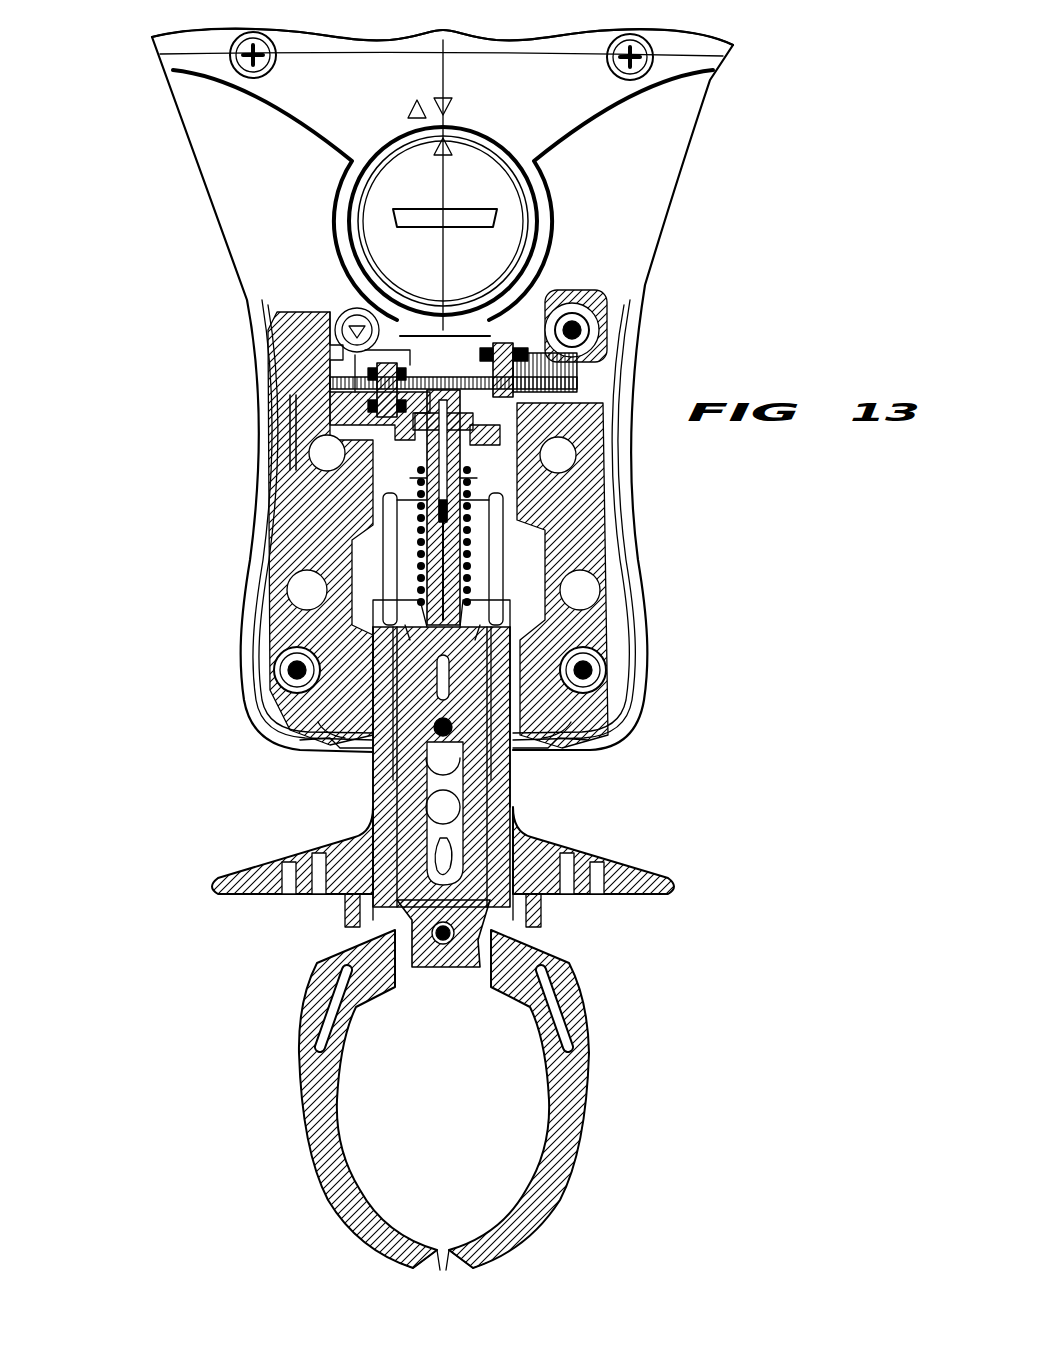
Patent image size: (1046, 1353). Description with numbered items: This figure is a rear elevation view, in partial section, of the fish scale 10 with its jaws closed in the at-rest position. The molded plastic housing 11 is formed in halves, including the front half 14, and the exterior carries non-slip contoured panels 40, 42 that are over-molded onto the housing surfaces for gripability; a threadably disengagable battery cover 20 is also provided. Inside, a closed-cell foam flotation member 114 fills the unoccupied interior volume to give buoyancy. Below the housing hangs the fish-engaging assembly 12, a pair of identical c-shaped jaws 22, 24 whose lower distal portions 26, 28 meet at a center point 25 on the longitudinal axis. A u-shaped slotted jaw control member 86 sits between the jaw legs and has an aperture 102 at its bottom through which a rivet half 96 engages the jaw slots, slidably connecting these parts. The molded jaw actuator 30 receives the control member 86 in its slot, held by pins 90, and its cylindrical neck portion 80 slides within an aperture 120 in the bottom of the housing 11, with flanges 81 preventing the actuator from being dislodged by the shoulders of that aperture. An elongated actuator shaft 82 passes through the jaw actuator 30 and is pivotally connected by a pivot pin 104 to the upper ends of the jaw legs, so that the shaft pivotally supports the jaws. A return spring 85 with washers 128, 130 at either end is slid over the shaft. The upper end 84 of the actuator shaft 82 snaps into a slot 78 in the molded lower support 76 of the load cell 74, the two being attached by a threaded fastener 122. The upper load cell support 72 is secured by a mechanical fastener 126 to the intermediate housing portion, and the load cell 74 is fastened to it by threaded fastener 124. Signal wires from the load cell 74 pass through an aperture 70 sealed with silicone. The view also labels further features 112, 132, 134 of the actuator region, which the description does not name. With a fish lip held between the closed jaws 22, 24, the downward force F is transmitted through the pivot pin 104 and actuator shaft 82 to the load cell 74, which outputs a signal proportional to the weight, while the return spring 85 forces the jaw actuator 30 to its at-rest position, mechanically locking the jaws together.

The fish scale 10 is at (728, 148).
The housing 11 is at (657, 217).
The fish-engaging assembly 12 is at (613, 845).
The front half of the housing 14 is at (630, 510).
The battery cover 20 is at (490, 252).
The jaw 22 is at (305, 1128).
The jaw 24 is at (588, 1125).
The center point 25 is at (445, 1253).
The lower distal portion 26 is at (427, 1268).
The lower distal portion 28 is at (480, 1270).
The jaw actuator 30 is at (667, 884).
The contoured panel 40 is at (233, 603).
The contoured panel 42 is at (648, 676).
The aperture 70 is at (372, 312).
The upper load cell support 72 is at (580, 382).
The load cell 74 is at (385, 360).
The lower support 76 is at (410, 428).
The slot 78 is at (565, 395).
The neck portion 80 is at (400, 778).
The flanges 81 is at (325, 742).
The actuator shaft 82 is at (395, 455).
The upper end of the actuator shaft 84 is at (500, 440).
The return spring 85 is at (412, 545).
The jaw control member 86 is at (478, 780).
The pins 90 is at (393, 643).
The rivet half 96 is at (427, 947).
The aperture 102 is at (443, 942).
The pivot pin 104 is at (400, 767).
The plunger aperture 112 is at (465, 812).
The flotation member 114 is at (589, 537).
The aperture 120 is at (475, 757).
The threaded fastener 122 is at (390, 345).
The threaded fastener 124 is at (600, 332).
The mechanical fastener 126 is at (600, 318).
The washer 128 is at (485, 462).
The washer 130 is at (480, 606).
The guide rail 132 is at (335, 470).
The spring guide 134 is at (405, 555).